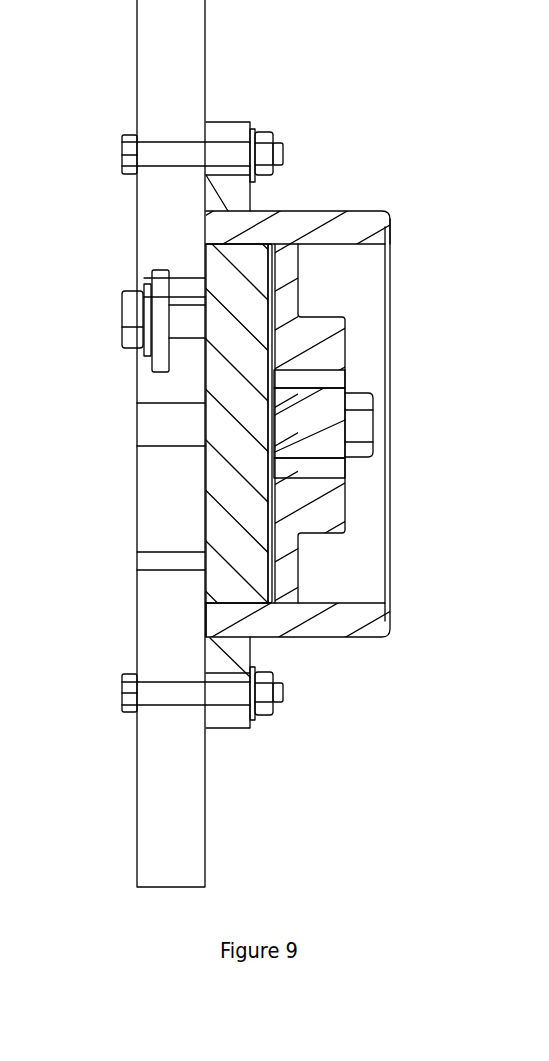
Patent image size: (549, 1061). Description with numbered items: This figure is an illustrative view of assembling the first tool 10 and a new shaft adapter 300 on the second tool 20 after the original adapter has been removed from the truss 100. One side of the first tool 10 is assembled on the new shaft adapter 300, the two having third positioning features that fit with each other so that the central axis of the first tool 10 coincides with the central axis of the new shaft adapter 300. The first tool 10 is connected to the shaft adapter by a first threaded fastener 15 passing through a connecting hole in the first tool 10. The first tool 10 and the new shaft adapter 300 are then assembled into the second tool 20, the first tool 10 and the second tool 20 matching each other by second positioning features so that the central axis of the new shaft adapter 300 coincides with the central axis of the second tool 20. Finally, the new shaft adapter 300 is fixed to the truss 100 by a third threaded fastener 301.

The truss 100 is at (150, 60).
The second tool 20 is at (243, 196).
The third threaded fastener 301 is at (128, 312).
The first threaded fastener 15 is at (368, 428).
The new shaft adapter 300 is at (230, 480).
The first tool 10 is at (308, 620).